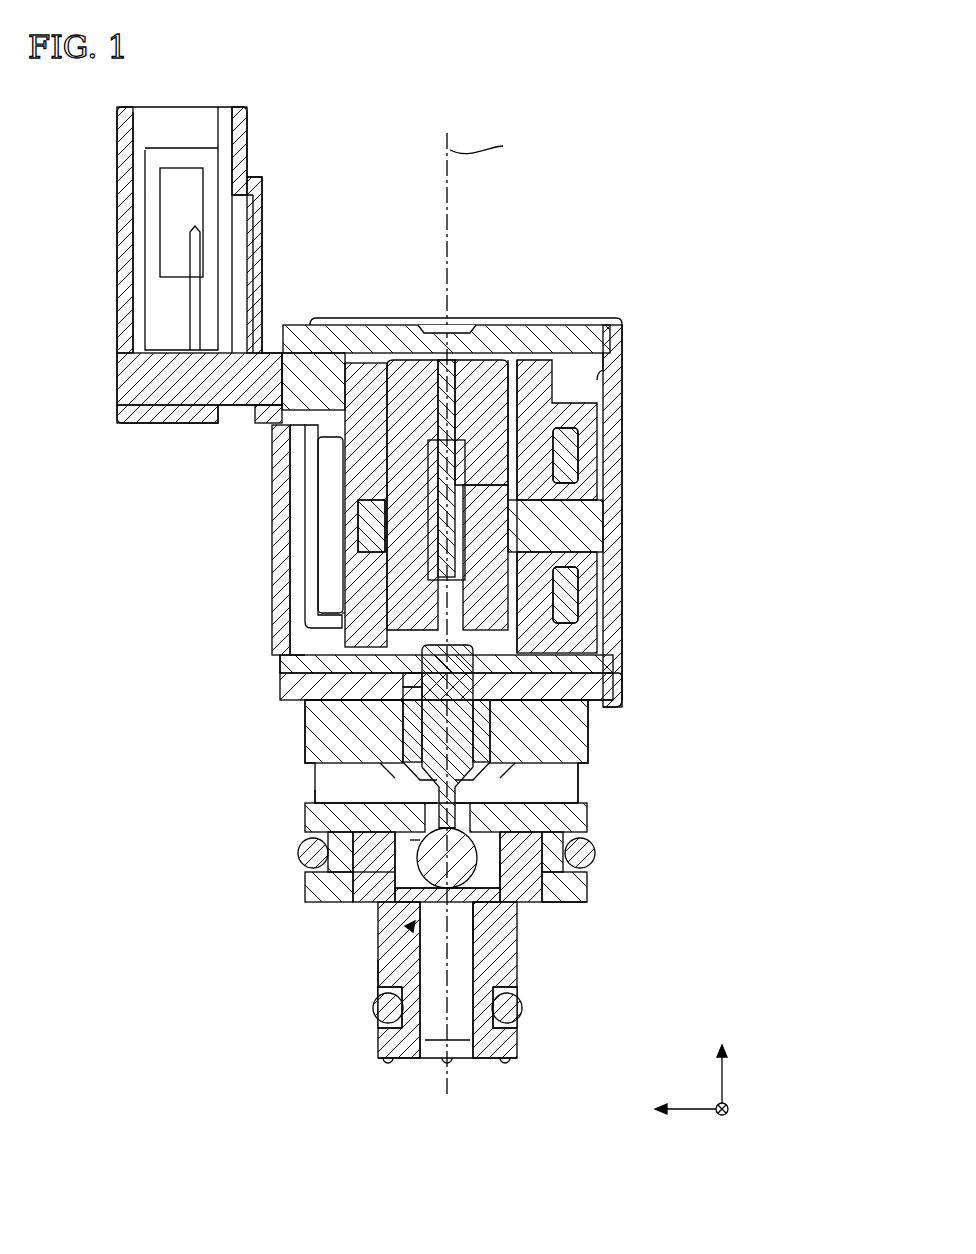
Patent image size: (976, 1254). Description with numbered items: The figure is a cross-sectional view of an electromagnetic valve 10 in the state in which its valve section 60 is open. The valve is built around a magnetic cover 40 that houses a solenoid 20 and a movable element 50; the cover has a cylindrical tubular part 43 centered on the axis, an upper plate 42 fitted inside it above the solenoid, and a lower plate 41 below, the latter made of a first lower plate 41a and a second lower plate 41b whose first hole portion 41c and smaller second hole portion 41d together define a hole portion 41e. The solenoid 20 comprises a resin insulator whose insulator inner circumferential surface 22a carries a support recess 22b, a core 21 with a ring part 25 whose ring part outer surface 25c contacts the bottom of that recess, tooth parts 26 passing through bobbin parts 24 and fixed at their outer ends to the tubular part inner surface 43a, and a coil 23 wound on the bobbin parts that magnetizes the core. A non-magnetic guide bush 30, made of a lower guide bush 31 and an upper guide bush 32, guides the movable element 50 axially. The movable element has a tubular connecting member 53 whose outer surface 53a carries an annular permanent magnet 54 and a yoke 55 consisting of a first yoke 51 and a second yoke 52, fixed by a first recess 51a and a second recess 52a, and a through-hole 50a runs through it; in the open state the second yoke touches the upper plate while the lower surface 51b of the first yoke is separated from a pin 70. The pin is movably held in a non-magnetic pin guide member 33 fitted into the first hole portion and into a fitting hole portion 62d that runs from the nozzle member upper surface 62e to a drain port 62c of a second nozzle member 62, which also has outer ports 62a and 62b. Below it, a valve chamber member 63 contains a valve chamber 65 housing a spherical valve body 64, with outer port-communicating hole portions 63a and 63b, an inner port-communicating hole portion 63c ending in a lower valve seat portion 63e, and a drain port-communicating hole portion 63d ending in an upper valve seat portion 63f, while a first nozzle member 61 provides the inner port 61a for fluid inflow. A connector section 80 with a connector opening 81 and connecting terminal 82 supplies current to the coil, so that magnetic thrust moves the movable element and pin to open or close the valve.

The electromagnetic valve 10 is at (668, 222).
The solenoid 20 is at (566, 409).
The core 21 is at (540, 400).
The insulator inner circumferential surface 22a is at (398, 372).
The support recess 22b is at (395, 600).
The coil 23 is at (568, 592).
The bobbin parts 24 is at (588, 530).
The ring part 25 is at (392, 545).
The ring part outer surface 25c is at (365, 520).
The tooth parts 26 is at (592, 540).
The guide bush 30 is at (710, 435).
The lower guide bush 31 is at (528, 572).
The upper guide bush 32 is at (566, 455).
The pin guide member 33 is at (403, 732).
The cover 40 is at (618, 320).
The lower plate 41 is at (735, 668).
The first lower plate 41a is at (590, 695).
The second lower plate 41b is at (618, 690).
The first hole portion 41c is at (405, 708).
The second hole portion 41d is at (410, 690).
The hole portion 41e is at (183, 698).
The upper plate 42 is at (362, 340).
The tubular part 43 is at (612, 632).
The tubular part inner surface 43a is at (608, 373).
The movable element 50 is at (497, 345).
The through-hole 50a is at (470, 742).
The first yoke 51 is at (332, 640).
The first recess 51a is at (342, 600).
The lower surface of the first yoke 51b is at (560, 662).
The second yoke 52 is at (300, 430).
The second recess 52a is at (330, 455).
The connecting member 53 is at (438, 472).
The outer surface 53a is at (484, 356).
The permanent magnet 54 is at (432, 570).
The yoke 55 is at (122, 443).
The valve section 60 is at (528, 918).
The first nozzle member 61 is at (500, 990).
The inner port 61a is at (428, 1040).
The second nozzle member 62 is at (325, 880).
The outer port 62a is at (353, 880).
The outer port 62b is at (538, 906).
The drain port 62c is at (372, 786).
The fitting hole portion 62d is at (475, 793).
The nozzle member upper surface 62e is at (576, 748).
The valve chamber member 63 is at (410, 905).
The outer port-communicating hole portion 63a is at (420, 845).
The outer port-communicating hole portion 63b is at (500, 870).
The inner port-communicating hole portion 63c is at (476, 934).
The drain port-communicating hole portion 63d is at (455, 822).
The lower valve seat portion 63e is at (385, 980).
The upper valve seat portion 63f is at (380, 872).
The valve body 64 is at (468, 856).
The valve chamber 65 is at (400, 930).
The pin 70 is at (560, 772).
The connector section 80 is at (238, 157).
The connector opening 81 is at (138, 150).
The connecting terminal 82 is at (200, 252).